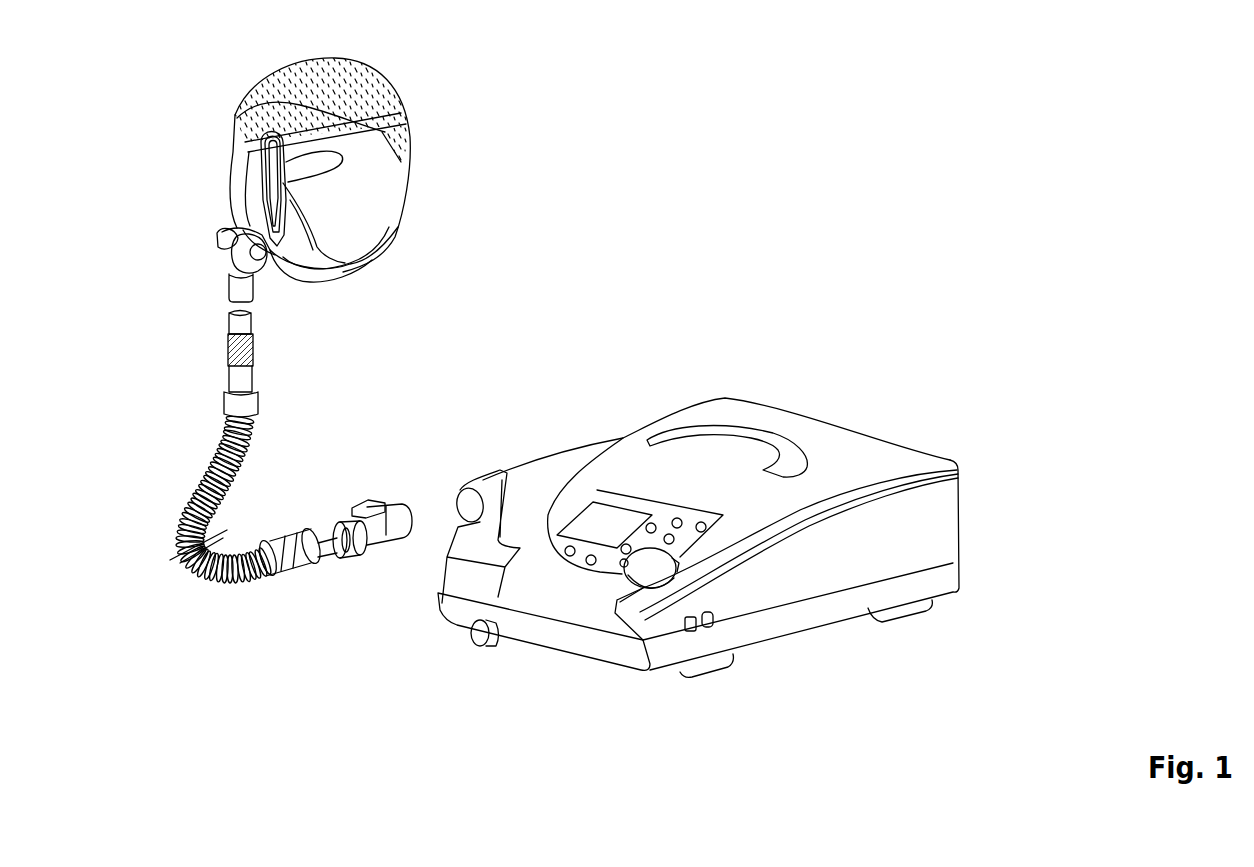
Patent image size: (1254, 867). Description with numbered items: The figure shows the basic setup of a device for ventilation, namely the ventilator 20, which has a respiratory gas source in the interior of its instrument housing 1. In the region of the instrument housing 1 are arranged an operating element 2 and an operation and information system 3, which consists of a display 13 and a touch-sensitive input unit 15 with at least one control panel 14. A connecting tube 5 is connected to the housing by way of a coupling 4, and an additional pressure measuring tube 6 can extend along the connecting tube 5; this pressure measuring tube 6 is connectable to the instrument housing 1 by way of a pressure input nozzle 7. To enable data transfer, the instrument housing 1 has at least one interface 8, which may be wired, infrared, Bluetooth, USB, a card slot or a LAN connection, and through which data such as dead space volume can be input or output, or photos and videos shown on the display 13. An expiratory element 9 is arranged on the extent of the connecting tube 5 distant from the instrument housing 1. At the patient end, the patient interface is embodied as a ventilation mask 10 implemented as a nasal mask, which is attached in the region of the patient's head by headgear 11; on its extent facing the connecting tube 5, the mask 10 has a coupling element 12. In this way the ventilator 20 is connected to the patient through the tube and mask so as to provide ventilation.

The instrument housing 1 is at (847, 438).
The operating element 2 is at (678, 513).
The operation and information system 3 is at (640, 424).
The coupling 4 is at (385, 515).
The connecting tube 5 is at (243, 457).
The pressure measuring tube 6 is at (333, 543).
The pressure input nozzle 7 is at (303, 570).
The interface 8 is at (710, 627).
The expiratory element 9 is at (242, 343).
The ventilation mask 10 is at (300, 256).
The headgear 11 is at (410, 165).
The coupling element 12 is at (243, 286).
The display 13 is at (640, 523).
The control panel 14 is at (640, 523).
The touch-sensitive input unit 15 is at (603, 520).
The ventilator 20 is at (940, 533).